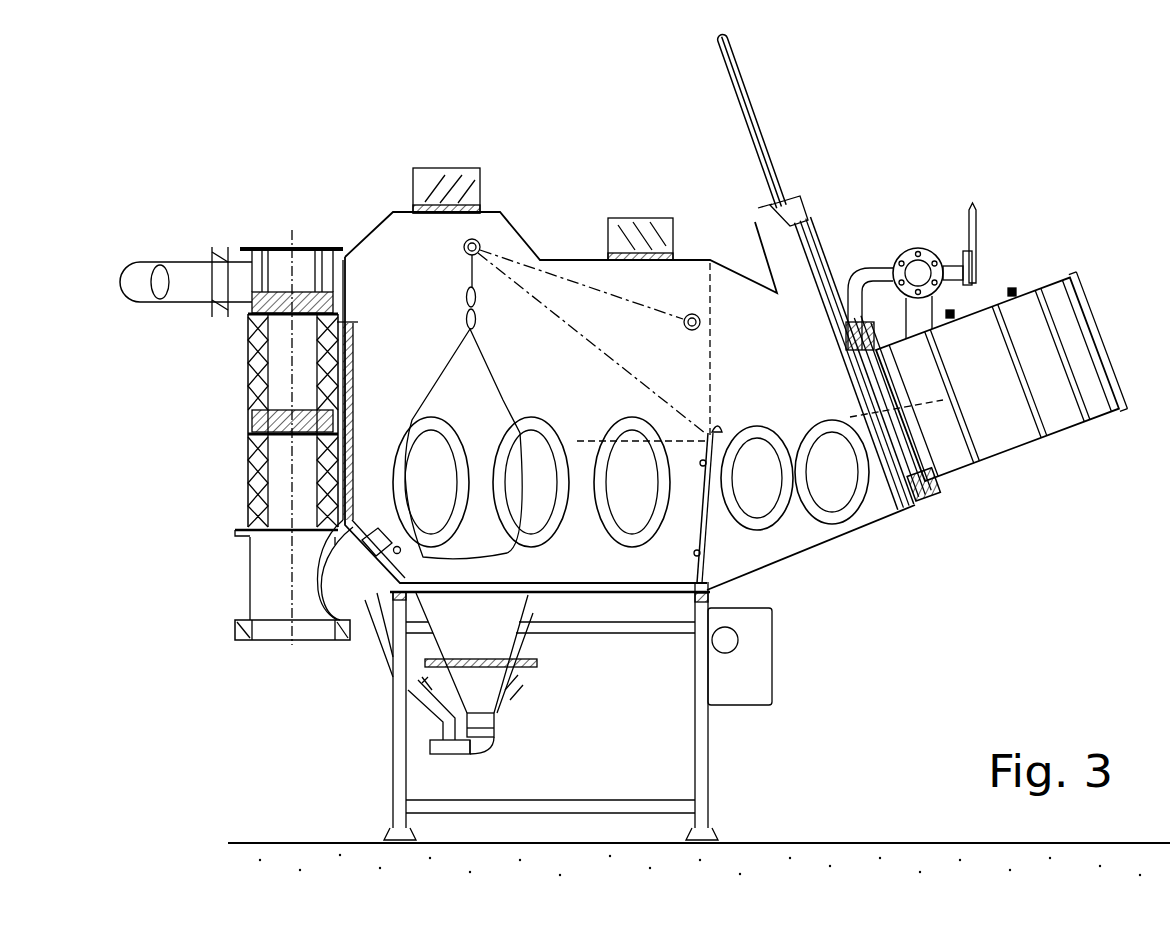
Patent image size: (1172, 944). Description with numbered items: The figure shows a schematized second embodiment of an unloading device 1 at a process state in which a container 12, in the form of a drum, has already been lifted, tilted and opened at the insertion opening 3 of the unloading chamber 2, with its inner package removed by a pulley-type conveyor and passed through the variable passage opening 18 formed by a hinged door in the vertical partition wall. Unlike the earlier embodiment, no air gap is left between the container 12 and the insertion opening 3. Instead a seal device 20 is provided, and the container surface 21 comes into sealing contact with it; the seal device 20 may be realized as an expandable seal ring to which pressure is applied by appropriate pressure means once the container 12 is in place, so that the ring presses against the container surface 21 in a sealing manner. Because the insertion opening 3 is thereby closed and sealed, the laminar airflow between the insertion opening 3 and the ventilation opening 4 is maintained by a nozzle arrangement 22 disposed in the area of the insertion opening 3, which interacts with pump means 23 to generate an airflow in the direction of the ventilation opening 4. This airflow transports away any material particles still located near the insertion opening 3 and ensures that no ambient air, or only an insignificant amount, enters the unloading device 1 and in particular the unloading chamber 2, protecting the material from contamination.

The unloading device 1 is at (858, 635).
The unloading chamber 2 is at (683, 297).
The insertion opening 3 is at (858, 397).
The ventilation opening 4 is at (352, 400).
The container 12 is at (990, 420).
The passage opening 18 is at (713, 540).
The seal device 20 is at (868, 330).
The container surface 21 is at (967, 310).
The nozzle arrangement 22 is at (937, 506).
The pump means 23 is at (931, 247).